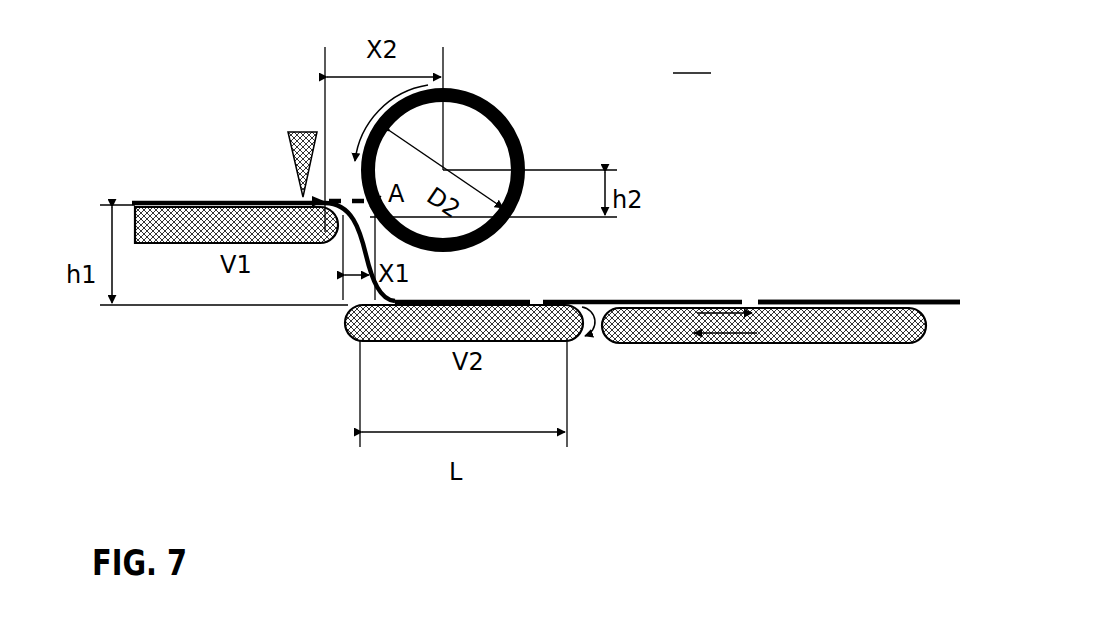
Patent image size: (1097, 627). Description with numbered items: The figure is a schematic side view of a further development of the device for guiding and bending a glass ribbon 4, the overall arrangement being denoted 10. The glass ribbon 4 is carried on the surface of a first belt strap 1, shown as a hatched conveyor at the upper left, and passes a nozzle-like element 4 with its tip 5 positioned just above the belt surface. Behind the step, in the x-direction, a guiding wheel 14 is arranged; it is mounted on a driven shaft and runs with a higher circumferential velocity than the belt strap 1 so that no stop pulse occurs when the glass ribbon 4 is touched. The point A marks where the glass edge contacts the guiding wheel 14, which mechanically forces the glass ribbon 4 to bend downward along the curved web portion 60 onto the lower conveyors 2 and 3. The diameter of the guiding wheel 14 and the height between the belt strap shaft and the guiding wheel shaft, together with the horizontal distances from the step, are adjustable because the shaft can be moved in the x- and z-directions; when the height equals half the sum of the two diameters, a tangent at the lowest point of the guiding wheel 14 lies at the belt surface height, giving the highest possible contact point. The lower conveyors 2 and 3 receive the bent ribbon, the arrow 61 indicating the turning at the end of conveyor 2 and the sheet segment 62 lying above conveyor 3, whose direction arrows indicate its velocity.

The belt strap 1 is at (178, 205).
The second conveyor 2 is at (352, 341).
The third conveyor 3 is at (660, 325).
The glass ribbon 4 is at (284, 203).
The adhesive / deposited material 5 is at (292, 130).
The apparatus 10 is at (691, 57).
The guiding wheel 14 is at (487, 100).
The web / sheet loop 60 is at (357, 275).
The rotation arrow 61 is at (604, 342).
The sheet segment 62 is at (870, 300).